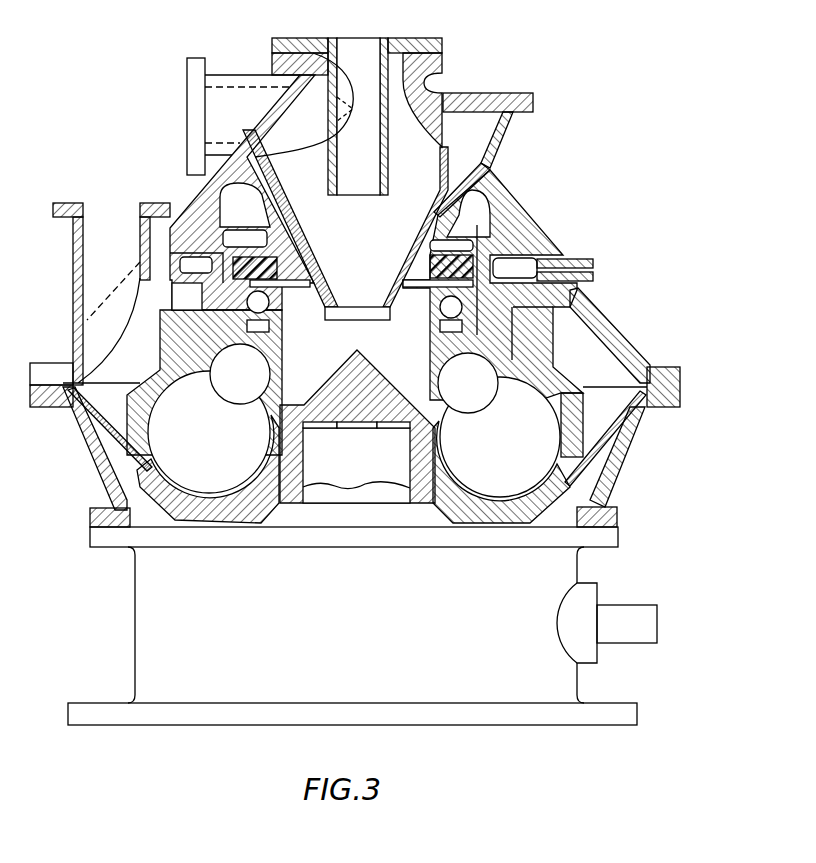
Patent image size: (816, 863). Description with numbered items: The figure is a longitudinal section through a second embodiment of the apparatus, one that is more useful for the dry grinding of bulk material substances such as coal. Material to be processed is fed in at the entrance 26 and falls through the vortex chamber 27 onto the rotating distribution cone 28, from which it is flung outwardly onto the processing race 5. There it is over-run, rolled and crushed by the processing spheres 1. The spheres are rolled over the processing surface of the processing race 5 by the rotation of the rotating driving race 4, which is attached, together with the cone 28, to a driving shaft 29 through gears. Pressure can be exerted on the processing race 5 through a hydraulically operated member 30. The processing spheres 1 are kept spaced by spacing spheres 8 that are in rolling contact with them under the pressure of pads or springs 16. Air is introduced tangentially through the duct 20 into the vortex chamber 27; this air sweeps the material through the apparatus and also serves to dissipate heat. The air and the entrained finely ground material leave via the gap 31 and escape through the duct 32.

The duct 20 is at (174, 113).
The entrance 26 is at (483, 110).
The vortex chamber 27 is at (428, 194).
The hydraulically operated member 30 is at (540, 247).
The pads or springs 16 is at (293, 262).
The duct 32 is at (110, 300).
The rotating distribution cone 28 is at (340, 365).
The spacing spheres 8 is at (460, 395).
The processing spheres 1 is at (492, 449).
The processing race 5 is at (615, 335).
The gap 31 is at (610, 420).
The rotating driving race 4 is at (480, 483).
The driving shaft 29 is at (643, 607).